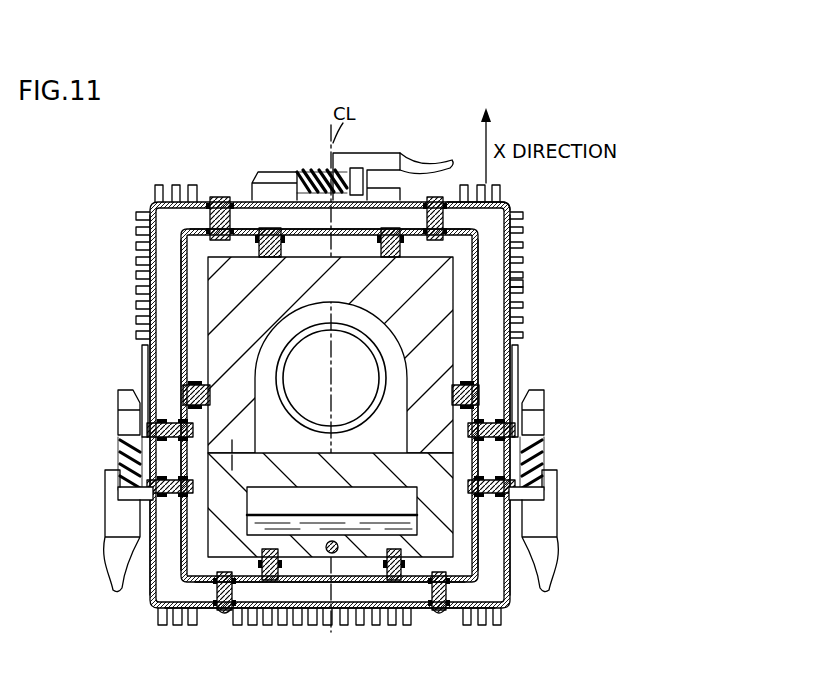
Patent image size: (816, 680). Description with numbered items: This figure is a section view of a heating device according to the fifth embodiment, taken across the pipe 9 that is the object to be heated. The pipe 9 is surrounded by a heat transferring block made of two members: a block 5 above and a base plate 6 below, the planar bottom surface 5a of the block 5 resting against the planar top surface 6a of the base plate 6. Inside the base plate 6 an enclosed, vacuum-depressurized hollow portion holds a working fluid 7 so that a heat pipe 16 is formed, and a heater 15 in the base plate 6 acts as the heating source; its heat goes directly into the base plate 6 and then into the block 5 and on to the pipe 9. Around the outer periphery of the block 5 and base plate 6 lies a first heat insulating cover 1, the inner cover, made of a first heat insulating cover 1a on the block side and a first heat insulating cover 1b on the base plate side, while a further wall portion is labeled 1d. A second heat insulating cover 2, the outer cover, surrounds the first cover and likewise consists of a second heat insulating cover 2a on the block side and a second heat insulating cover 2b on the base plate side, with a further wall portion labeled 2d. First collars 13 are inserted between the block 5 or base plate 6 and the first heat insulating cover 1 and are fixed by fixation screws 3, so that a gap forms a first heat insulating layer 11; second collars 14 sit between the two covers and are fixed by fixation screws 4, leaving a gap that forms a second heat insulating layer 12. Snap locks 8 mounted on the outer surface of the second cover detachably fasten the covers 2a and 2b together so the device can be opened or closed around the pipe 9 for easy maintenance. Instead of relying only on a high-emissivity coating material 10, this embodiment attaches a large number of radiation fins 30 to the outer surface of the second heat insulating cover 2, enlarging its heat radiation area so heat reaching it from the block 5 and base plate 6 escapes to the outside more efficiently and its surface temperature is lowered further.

The first heat insulating cover 1 is at (331, 448).
The first heat insulating cover on the side of block 1a is at (181, 258).
The first heat insulating cover on the side of base plate 1b is at (351, 588).
The inner case right wall 1d is at (480, 312).
The second heat insulating cover 2 is at (329, 426).
The second heat insulating cover on the side of block 2a is at (137, 223).
The second heat insulating cover on the side of base plate 2b is at (422, 612).
The outer case right wall 2d is at (521, 252).
The fixation screw 3 is at (260, 232).
The fixation screw 4 is at (433, 197).
The block 5 is at (237, 283).
The bottom surface of block 5a is at (232, 455).
The base plate 6 is at (210, 548).
The top surface of base plate 6a is at (232, 455).
The working fluid 7 is at (303, 527).
The snap lock 8 is at (380, 165).
The pipe 9 is at (283, 376).
The coating material 10 is at (457, 200).
The first heat insulating layer 11 is at (197, 303).
The second heat insulating layer 12 is at (167, 330).
The first collar 13 is at (259, 246).
The second collar 14 is at (210, 216).
The heater 15 is at (332, 553).
The heat pipe 16 is at (260, 500).
The radiation fin 30 is at (518, 283).